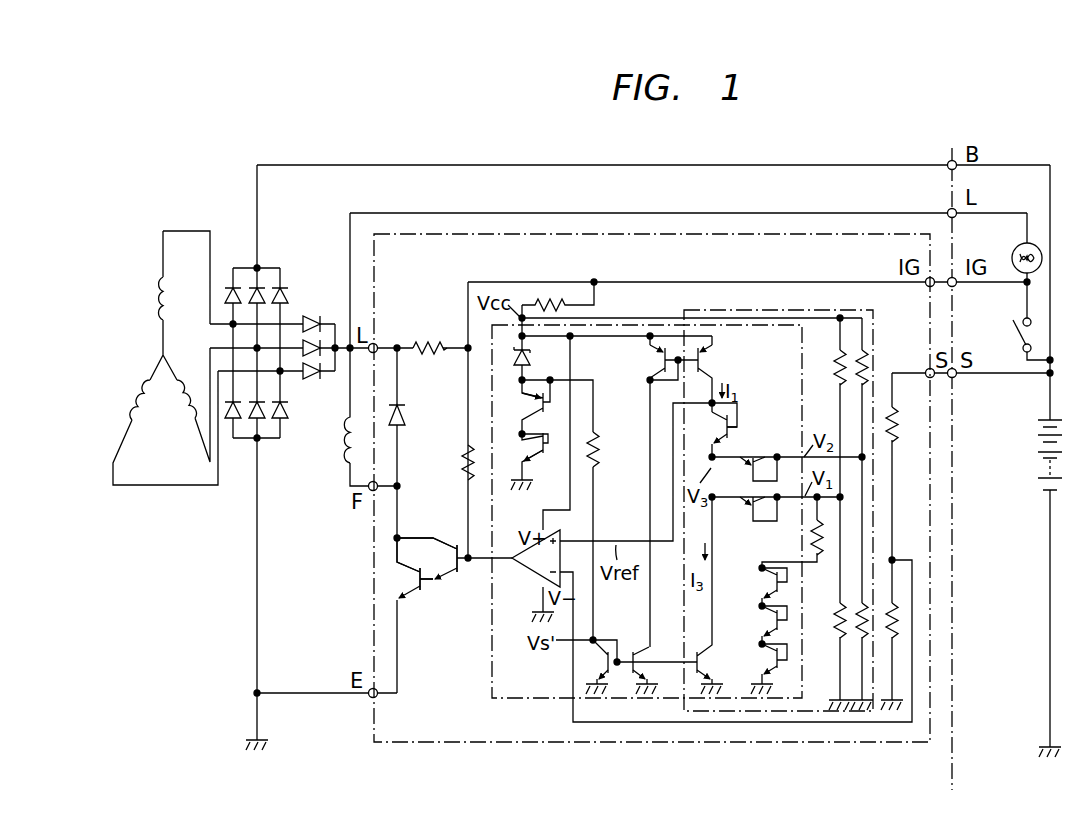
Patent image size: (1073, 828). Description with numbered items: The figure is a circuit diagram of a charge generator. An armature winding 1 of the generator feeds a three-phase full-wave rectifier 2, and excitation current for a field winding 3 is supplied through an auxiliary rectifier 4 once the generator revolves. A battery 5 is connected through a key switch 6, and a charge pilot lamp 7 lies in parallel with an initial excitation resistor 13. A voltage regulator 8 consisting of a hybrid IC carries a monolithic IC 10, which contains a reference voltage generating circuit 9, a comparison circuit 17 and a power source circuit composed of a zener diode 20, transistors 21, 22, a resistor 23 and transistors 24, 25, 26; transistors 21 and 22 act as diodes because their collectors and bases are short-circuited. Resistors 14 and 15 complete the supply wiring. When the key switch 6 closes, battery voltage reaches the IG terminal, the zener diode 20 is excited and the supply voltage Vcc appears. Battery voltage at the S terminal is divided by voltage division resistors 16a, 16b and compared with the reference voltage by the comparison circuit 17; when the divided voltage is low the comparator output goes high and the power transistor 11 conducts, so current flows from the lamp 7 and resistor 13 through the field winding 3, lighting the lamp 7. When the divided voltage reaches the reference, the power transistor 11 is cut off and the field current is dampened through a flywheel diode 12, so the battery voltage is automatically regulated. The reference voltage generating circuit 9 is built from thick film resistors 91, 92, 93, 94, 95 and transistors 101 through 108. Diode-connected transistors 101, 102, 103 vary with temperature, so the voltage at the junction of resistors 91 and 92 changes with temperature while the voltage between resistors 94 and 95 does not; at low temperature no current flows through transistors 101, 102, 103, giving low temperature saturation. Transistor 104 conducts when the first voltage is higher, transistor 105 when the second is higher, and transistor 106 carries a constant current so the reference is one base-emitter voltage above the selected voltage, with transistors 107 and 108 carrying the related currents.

The armature winding 1 is at (171, 412).
The three-phase full-wave rectifier 2 is at (264, 266).
The field winding 3 is at (344, 446).
The auxiliary rectifier 4 is at (310, 316).
The battery 5 is at (1035, 444).
The key switch 6 is at (1010, 321).
The charge pilot lamp 7 is at (1012, 252).
The voltage regulator 8 is at (722, 744).
The reference voltage generating circuit 9 is at (813, 713).
The monolithic IC 10 is at (560, 699).
The power transistor 11 is at (428, 590).
The flywheel diode 12 is at (405, 413).
The initial excitation resistor 13 is at (434, 342).
The resistor 14 is at (463, 453).
The resistor 15 is at (548, 300).
The voltage division resistor 16a is at (896, 428).
The voltage division resistor 16b is at (898, 620).
The comparison circuit 17 is at (522, 567).
The zener diode 20 is at (529, 357).
The transistor 21 is at (533, 401).
The transistor 22 is at (533, 452).
The resistor 23 is at (598, 444).
The transistor 24 is at (596, 660).
The transistor 25 is at (646, 652).
The transistor 26 is at (655, 359).
The thick film resistor 91 is at (840, 356).
The thick film resistor 92 is at (836, 616).
The thick film resistor 93 is at (815, 530).
The thick film resistor 94 is at (862, 380).
The thick film resistor 95 is at (858, 630).
The transistor 101 is at (765, 592).
The transistor 102 is at (765, 630).
The transistor 103 is at (765, 667).
The transistor 104 is at (750, 508).
The transistor 105 is at (756, 460).
The transistor 106 is at (735, 434).
The transistor 107 is at (709, 360).
The transistor 108 is at (700, 650).